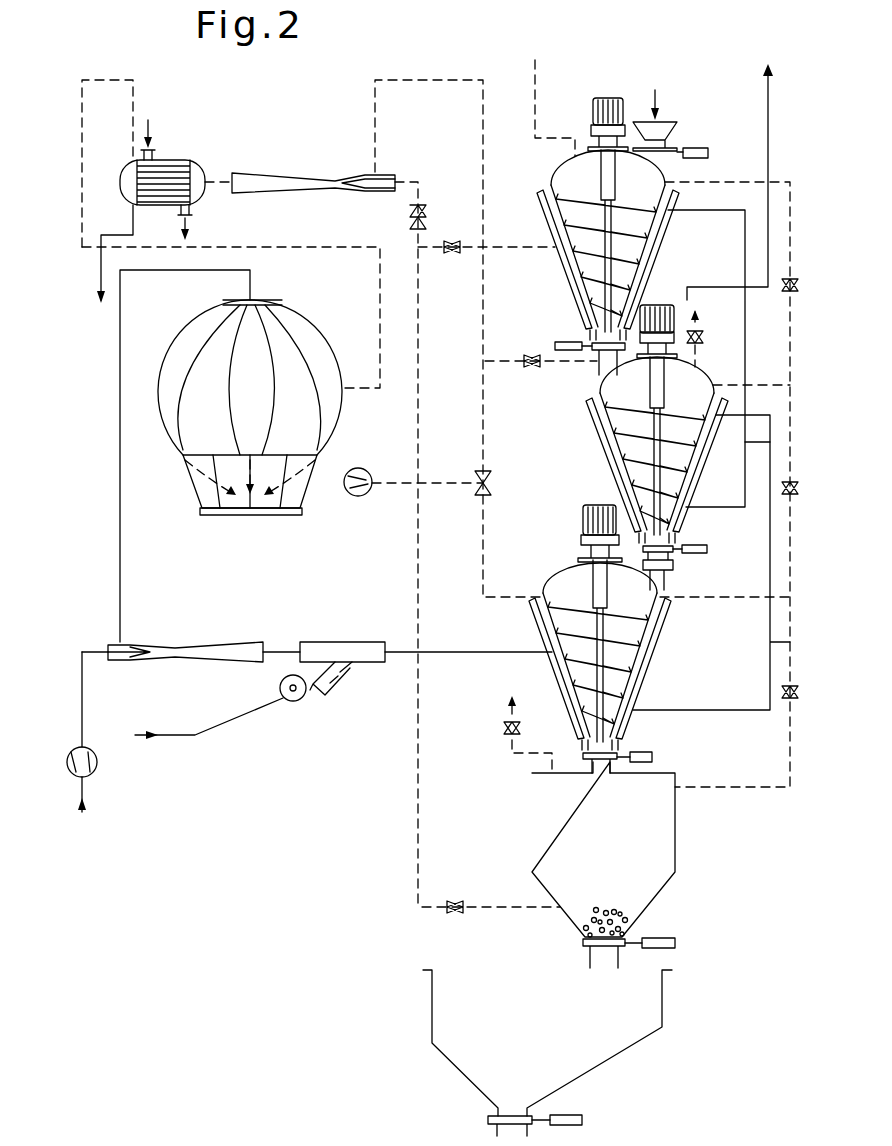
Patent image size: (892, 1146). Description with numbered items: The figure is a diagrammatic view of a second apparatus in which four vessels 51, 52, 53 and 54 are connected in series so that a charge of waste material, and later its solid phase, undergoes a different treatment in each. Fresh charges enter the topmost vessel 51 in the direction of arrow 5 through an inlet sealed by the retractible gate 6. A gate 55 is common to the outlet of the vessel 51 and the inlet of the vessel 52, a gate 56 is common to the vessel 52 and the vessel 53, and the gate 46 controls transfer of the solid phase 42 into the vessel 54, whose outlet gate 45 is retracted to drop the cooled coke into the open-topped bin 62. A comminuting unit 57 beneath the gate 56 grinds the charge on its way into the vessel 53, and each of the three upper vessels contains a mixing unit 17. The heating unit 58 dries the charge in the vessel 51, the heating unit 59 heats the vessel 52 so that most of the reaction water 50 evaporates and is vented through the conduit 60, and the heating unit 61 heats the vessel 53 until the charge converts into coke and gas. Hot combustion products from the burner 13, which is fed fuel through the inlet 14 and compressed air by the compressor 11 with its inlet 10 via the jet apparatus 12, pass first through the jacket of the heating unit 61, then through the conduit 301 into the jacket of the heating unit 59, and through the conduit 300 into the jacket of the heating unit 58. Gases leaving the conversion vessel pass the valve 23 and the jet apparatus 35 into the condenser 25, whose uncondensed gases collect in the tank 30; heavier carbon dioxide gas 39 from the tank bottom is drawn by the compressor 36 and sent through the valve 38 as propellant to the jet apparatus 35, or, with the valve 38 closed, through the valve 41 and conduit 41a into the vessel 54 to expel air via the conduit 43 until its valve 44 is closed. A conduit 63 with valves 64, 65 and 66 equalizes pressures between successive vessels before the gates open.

The arrow 5 is at (655, 89).
The retractible gate 6 is at (697, 147).
The inlet 10 is at (74, 755).
The air compressor 11 is at (97, 763).
The jet apparatus 12 is at (204, 642).
The burner 13 is at (322, 645).
The fuel inlet 14 is at (191, 724).
The mixing unit 17 is at (616, 640).
The valve 23 is at (475, 483).
The condenser 25 is at (166, 175).
The tank 30 is at (180, 324).
The jet apparatus 35 is at (255, 175).
The compressor 36 is at (358, 496).
The valve 38 is at (427, 213).
The carbon dioxide gas 39 is at (303, 470).
The valve 41 is at (456, 915).
The conduit 41a is at (418, 849).
The solid phase 42 is at (636, 921).
The conduit 43 is at (510, 745).
The valve 44 is at (503, 728).
The gate 45 is at (675, 944).
The gate 46 is at (652, 757).
The reaction water 50 is at (676, 311).
The vessel 51 is at (553, 178).
The vessel 52 is at (600, 390).
The vessel 53 is at (572, 578).
The vessel 54 is at (532, 821).
The gate 55 is at (560, 342).
The gate 56 is at (707, 549).
The comminuting unit 57 is at (674, 567).
The heating unit 58 is at (568, 262).
The heating unit 59 is at (612, 447).
The conduit 60 is at (700, 356).
The heating unit 61 is at (648, 661).
The bin 62 is at (544, 1040).
The conduit 63 is at (742, 790).
The valve 64 is at (799, 286).
The valve 65 is at (799, 489).
The valve 66 is at (799, 692).
The conduit 300 is at (770, 442).
The conduit 301 is at (790, 642).